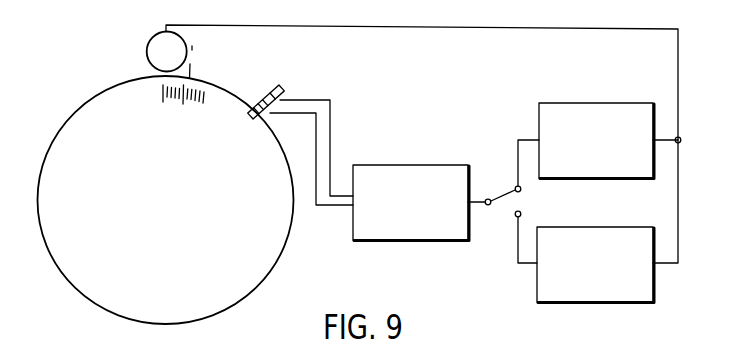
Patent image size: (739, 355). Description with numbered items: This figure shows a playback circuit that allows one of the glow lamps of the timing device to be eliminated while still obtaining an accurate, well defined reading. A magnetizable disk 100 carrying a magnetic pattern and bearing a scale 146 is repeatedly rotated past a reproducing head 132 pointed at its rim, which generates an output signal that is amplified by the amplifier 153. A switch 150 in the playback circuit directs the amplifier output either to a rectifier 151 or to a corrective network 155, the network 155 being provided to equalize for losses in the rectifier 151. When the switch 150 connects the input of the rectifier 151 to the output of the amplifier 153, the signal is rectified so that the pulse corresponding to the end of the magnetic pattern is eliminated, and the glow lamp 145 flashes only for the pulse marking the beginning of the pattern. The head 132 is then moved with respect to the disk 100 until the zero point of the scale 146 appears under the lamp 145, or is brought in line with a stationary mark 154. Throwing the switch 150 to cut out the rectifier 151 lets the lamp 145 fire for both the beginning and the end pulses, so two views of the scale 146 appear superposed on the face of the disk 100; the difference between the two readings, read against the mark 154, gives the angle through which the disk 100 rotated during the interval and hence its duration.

The disk 100 is at (88, 302).
The glow lamp 145 is at (147, 50).
The scale 146 is at (163, 88).
The stationary mark 154 is at (191, 70).
The sensing head 132 is at (280, 90).
The amplifier 153 is at (433, 242).
The switch 150 is at (515, 189).
The rectifier 151 is at (562, 103).
The corrective network 155 is at (570, 303).